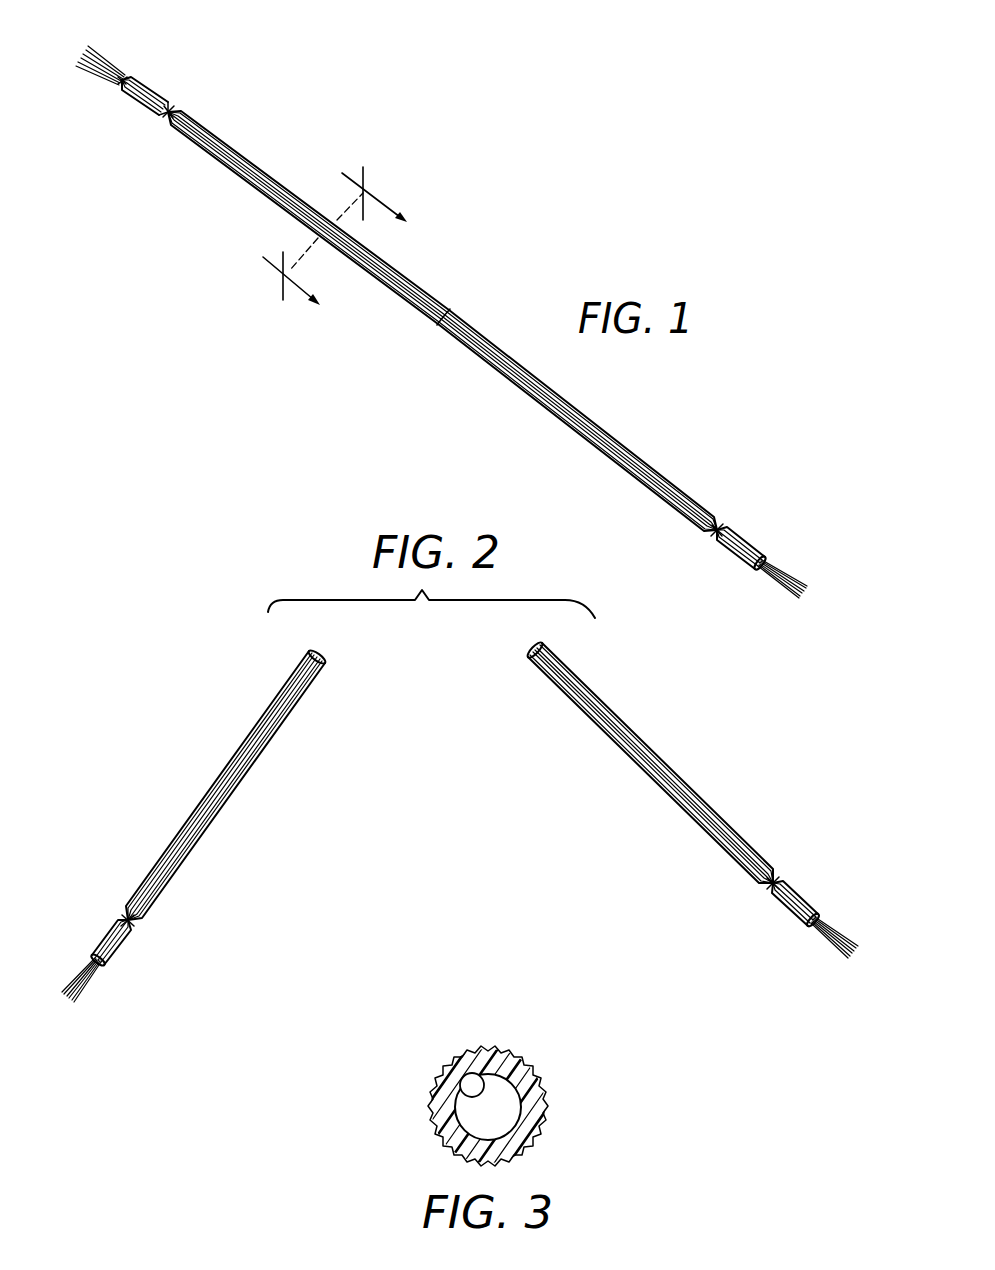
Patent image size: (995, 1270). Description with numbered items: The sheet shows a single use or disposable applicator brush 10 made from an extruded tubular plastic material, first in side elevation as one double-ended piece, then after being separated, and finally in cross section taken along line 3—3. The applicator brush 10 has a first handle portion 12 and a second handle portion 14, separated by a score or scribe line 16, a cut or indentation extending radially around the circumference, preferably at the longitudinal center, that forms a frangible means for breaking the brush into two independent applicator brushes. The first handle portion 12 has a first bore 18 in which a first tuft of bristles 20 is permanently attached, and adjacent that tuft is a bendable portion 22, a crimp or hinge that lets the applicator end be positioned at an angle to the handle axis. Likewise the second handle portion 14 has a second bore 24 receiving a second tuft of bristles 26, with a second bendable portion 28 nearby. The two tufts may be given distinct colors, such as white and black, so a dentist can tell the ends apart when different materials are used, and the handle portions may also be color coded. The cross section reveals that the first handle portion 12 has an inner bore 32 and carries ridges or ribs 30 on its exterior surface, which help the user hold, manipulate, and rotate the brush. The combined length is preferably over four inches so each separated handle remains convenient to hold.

In FIG. 1, the applicator brush 10 is at (490, 268).
In FIG. 1, the first handle portion 12 is at (265, 172).
In FIG. 2, the first handle portion 12 is at (155, 865).
In FIG. 3, the first handle portion 12 is at (545, 1103).
In FIG. 1, the second handle portion 14 is at (577, 432).
In FIG. 2, the second handle portion 14 is at (707, 805).
In FIG. 1, the score or scribe line 16 is at (443, 318).
In FIG. 1, the first bore 18 is at (123, 83).
In FIG. 1, the first tuft of bristles 20 is at (107, 56).
In FIG. 2, the first tuft of bristles 20 is at (90, 990).
In FIG. 1, the bendable portion 22 is at (168, 113).
In FIG. 2, the bendable portion 22 is at (133, 923).
In FIG. 1, the second bore 24 is at (760, 568).
In FIG. 1, the second tuft of bristles 26 is at (797, 580).
In FIG. 2, the second tuft of bristles 26 is at (830, 957).
In FIG. 1, the second bendable portion 28 is at (718, 528).
In FIG. 2, the second bendable portion 28 is at (773, 892).
In FIG. 3, the ridges or ribs 30 is at (527, 1062).
In FIG. 3, the inner bore 32 is at (460, 1092).
In FIG. 1, the line 3— 3 is at (323, 226).